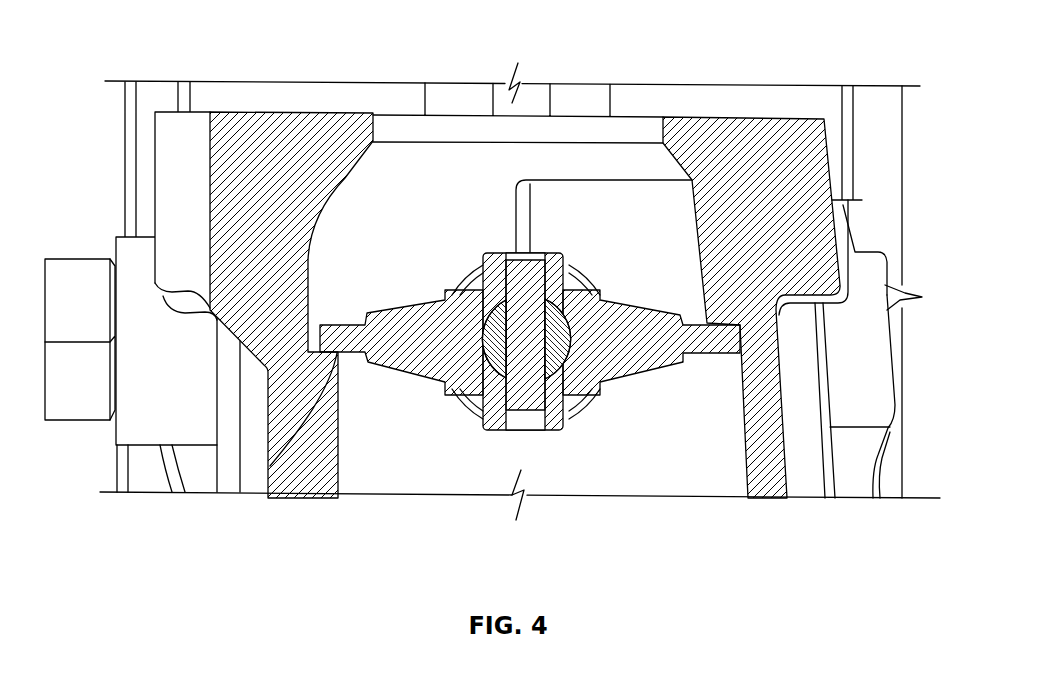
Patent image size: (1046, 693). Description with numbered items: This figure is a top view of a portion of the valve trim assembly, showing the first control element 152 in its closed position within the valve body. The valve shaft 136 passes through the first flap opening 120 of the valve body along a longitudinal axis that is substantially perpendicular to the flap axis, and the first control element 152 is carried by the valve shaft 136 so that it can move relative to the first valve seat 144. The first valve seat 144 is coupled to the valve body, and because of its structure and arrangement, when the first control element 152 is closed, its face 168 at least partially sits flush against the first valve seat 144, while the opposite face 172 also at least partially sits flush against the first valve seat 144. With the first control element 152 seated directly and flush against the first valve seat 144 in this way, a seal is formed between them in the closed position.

The first flap opening 120 is at (338, 467).
The valve shaft 136 is at (553, 320).
The first valve seat 144 is at (549, 302).
The first control element 152 is at (430, 318).
The face 168 is at (718, 292).
The face 172 is at (268, 468).